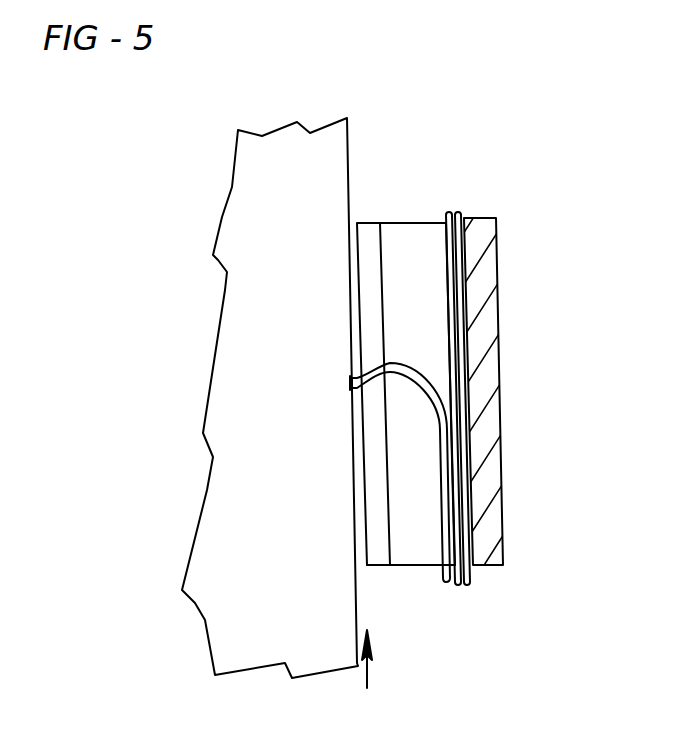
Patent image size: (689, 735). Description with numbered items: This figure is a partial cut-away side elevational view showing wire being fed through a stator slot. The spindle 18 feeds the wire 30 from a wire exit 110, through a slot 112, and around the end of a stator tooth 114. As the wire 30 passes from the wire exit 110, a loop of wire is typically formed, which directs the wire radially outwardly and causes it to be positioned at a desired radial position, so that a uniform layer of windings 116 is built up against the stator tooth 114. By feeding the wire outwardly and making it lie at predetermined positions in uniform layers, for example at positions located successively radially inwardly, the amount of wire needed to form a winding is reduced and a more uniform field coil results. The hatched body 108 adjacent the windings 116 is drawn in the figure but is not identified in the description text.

The spindle 18 is at (332, 153).
The wire 30 is at (393, 362).
The block 108 is at (497, 343).
The wire exit 110 is at (357, 385).
The slot 112 is at (380, 555).
The stator tooth 114 is at (412, 227).
The windings 116 is at (461, 588).